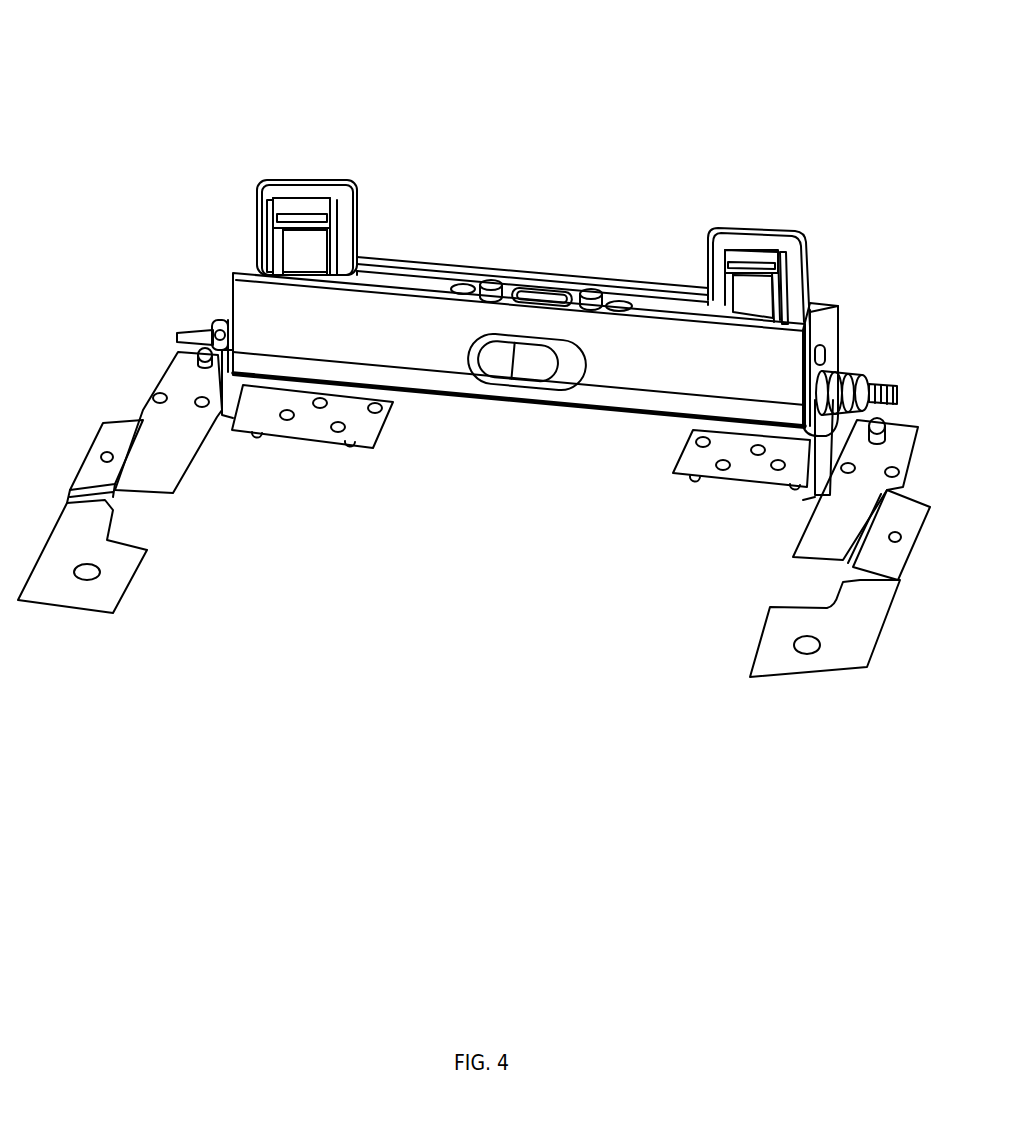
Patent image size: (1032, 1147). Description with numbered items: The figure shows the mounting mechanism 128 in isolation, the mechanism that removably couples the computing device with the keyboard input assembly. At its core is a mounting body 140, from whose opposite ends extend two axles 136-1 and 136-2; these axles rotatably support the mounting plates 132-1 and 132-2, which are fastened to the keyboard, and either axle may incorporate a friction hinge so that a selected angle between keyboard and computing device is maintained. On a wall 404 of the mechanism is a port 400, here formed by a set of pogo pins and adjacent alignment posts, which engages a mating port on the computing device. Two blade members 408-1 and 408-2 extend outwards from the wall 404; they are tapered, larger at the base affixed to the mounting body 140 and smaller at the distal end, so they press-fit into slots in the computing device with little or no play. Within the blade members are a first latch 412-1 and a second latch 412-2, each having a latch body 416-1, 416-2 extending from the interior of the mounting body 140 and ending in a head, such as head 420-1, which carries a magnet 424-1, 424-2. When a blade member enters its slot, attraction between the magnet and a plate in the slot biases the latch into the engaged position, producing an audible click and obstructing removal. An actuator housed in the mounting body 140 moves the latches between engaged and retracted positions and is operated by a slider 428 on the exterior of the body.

The mounting mechanism 128 is at (541, 146).
The mounting plate 132-1 is at (60, 590).
The mounting plate 132-2 is at (832, 650).
The axle 136-1 is at (210, 325).
The axle 136-2 is at (860, 377).
The mounting body 140 is at (627, 403).
The port 400 is at (565, 287).
The wall 404 is at (662, 302).
The blade member 408-1 is at (299, 169).
The blade member 408-2 is at (803, 242).
The first latch 412-1 is at (270, 260).
The second latch 412-2 is at (798, 291).
The latch body 416-1 is at (287, 245).
The latch body 416-2 is at (760, 300).
The head 420-1 is at (283, 200).
The magnet 424-1 is at (323, 220).
The magnet 424-2 is at (770, 268).
The slider 428 is at (500, 372).